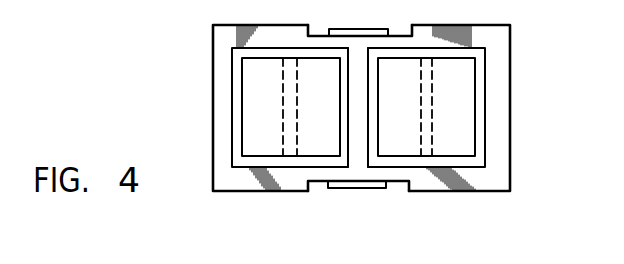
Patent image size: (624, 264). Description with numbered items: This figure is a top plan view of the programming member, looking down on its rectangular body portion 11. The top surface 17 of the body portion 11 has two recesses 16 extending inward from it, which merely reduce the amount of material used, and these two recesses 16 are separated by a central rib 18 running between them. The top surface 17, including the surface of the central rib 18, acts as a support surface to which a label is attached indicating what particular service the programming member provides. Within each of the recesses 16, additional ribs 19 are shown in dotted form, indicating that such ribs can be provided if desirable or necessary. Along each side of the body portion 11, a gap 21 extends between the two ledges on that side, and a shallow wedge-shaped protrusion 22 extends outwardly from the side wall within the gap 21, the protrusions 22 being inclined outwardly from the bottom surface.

The body portion 11 is at (498, 143).
The recesses 16 is at (458, 79).
The top surface 17 is at (490, 38).
The central rib 18 is at (357, 148).
The additional ribs 19 is at (283, 90).
The gap 21 is at (398, 33).
The wedge-shaped protrusion 22 is at (333, 31).